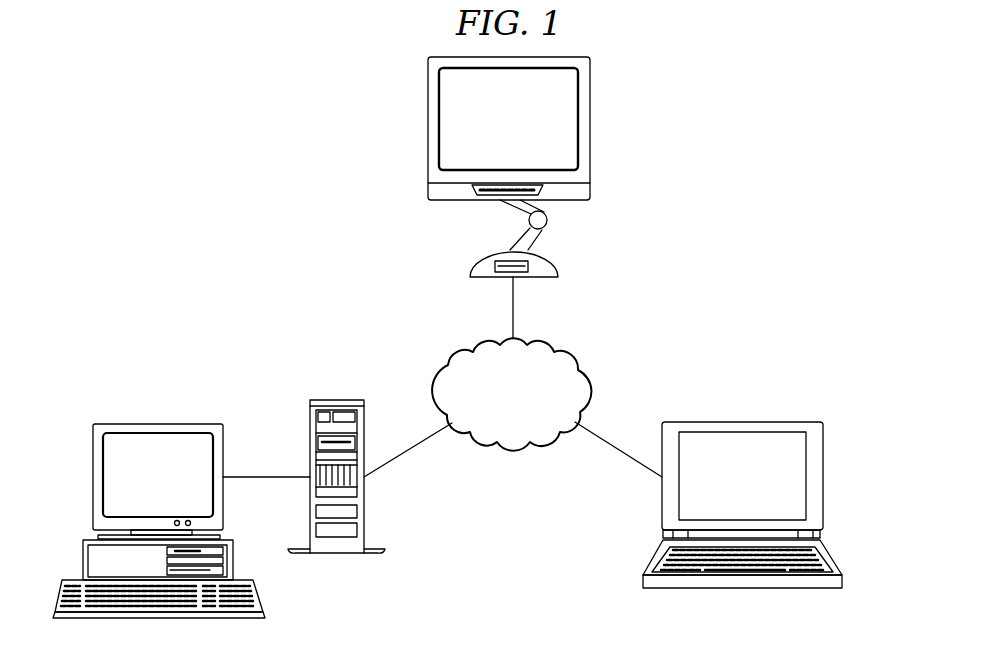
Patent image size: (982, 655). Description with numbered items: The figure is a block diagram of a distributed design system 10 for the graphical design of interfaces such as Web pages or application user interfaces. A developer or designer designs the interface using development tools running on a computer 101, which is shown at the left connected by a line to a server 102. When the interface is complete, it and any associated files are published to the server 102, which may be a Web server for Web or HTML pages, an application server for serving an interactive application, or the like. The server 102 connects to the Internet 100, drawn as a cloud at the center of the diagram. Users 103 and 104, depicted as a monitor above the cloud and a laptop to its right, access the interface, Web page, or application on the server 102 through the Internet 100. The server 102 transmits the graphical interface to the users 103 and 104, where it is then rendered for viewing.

The distributed design system 10 is at (765, 275).
The Internet 100 is at (452, 352).
The computer 101 is at (93, 488).
The server 102 is at (337, 553).
The user 103 is at (590, 118).
The user 104 is at (823, 475).